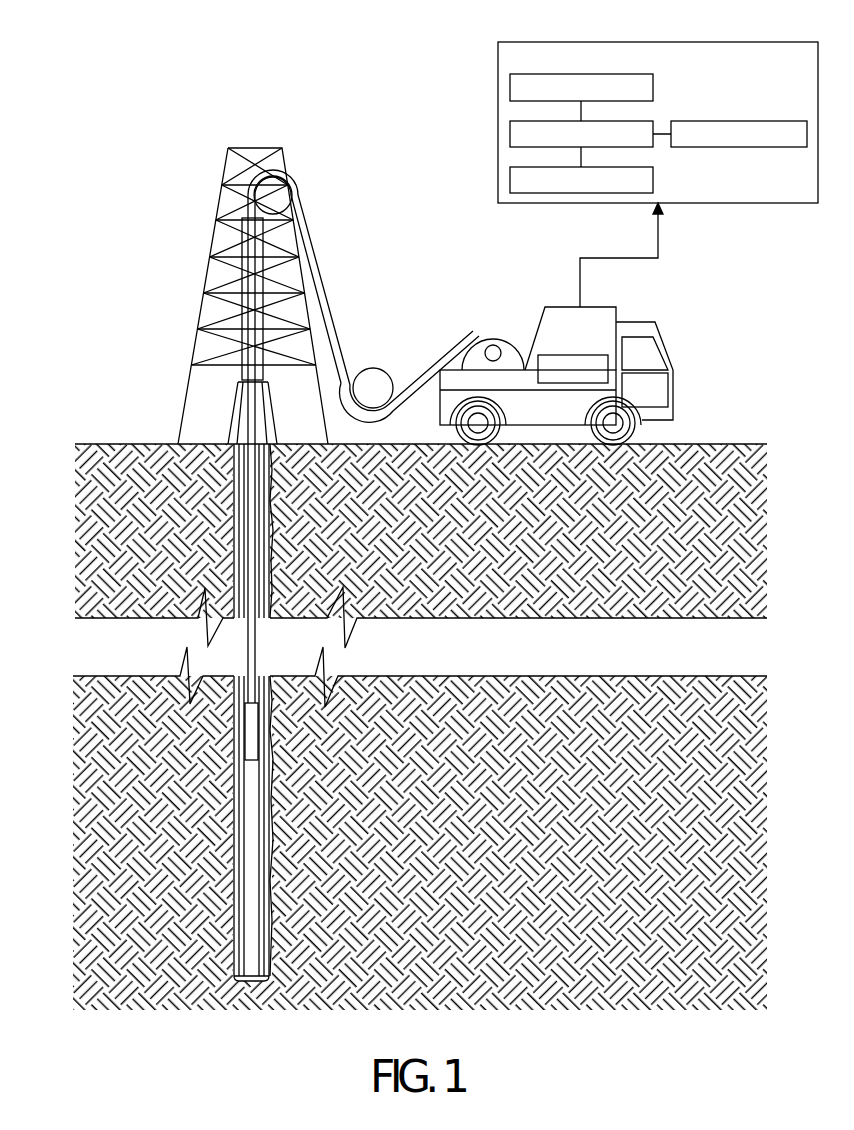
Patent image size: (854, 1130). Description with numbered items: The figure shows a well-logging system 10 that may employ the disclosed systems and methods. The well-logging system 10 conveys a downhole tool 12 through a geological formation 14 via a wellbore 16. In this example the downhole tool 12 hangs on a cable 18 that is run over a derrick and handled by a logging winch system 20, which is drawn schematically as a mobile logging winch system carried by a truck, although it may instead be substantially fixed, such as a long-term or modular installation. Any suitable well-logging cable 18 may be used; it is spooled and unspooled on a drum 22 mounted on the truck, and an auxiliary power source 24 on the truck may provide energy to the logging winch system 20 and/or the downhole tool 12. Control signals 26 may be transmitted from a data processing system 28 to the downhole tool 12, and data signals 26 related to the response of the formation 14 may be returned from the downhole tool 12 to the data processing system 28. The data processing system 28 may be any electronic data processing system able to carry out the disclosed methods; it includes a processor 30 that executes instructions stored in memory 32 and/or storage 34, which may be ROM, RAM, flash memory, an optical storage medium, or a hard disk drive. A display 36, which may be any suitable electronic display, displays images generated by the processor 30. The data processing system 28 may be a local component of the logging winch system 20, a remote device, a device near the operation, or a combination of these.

The well-logging system 10 is at (155, 205).
The downhole tool 12 is at (243, 714).
The geological formation 14 is at (83, 776).
The wellbore 16 is at (226, 502).
The cable 18 is at (337, 289).
The logging winch system 20 is at (549, 338).
The drum 22 is at (486, 323).
The auxiliary power source 24 is at (573, 357).
The control signals and data signals 26 is at (660, 224).
The data processing system 28 is at (635, 108).
The processor 30 is at (632, 121).
The memory 32 is at (510, 87).
The storage 34 is at (647, 178).
The display 36 is at (742, 121).